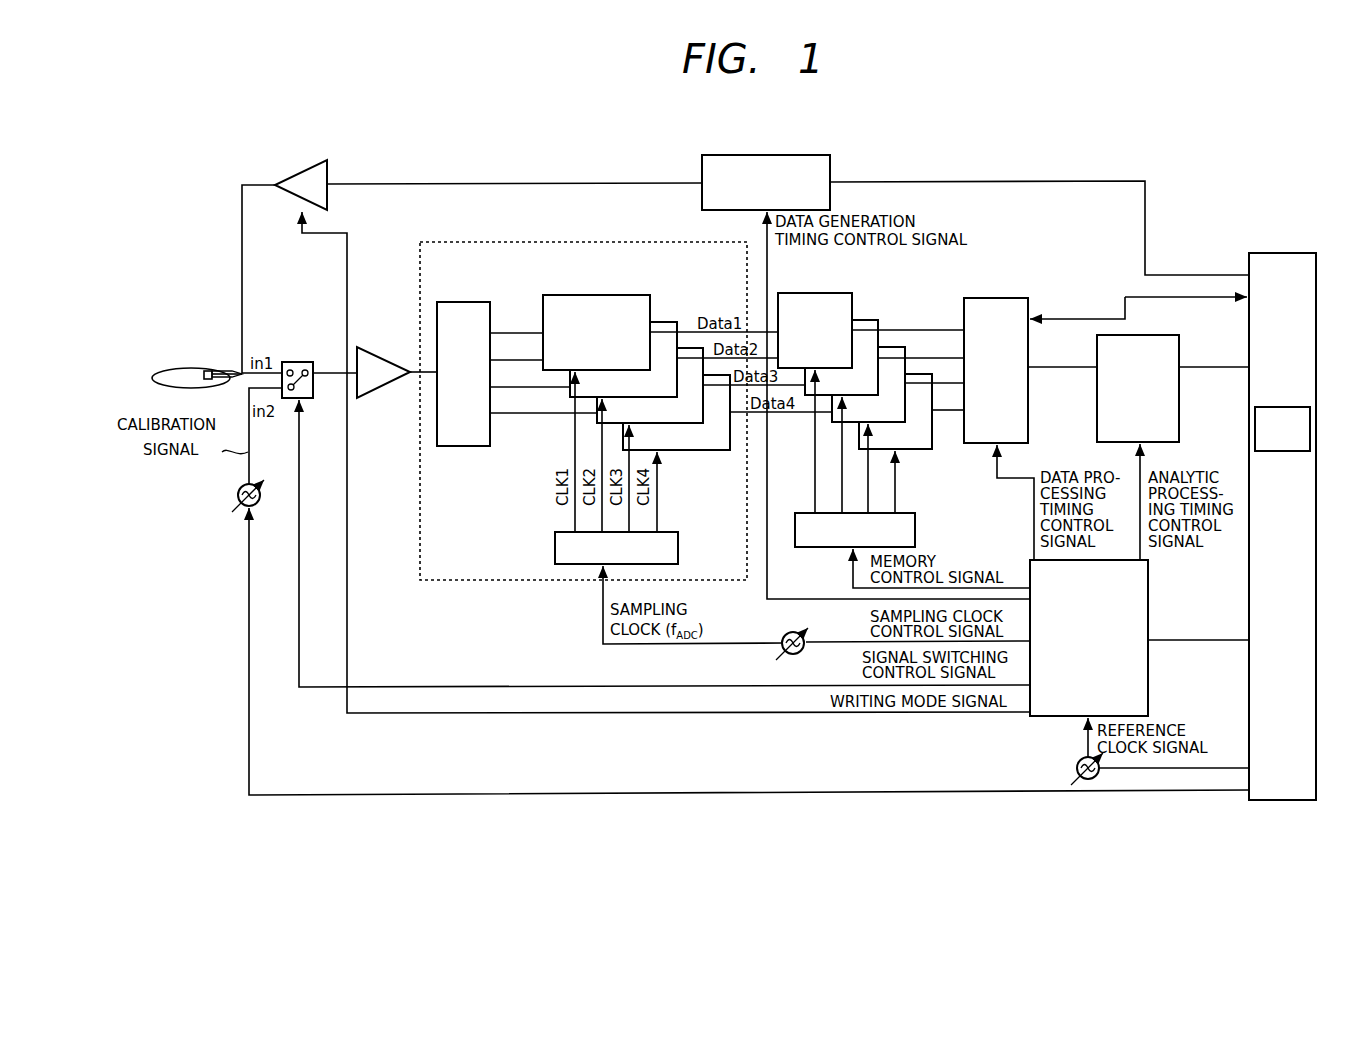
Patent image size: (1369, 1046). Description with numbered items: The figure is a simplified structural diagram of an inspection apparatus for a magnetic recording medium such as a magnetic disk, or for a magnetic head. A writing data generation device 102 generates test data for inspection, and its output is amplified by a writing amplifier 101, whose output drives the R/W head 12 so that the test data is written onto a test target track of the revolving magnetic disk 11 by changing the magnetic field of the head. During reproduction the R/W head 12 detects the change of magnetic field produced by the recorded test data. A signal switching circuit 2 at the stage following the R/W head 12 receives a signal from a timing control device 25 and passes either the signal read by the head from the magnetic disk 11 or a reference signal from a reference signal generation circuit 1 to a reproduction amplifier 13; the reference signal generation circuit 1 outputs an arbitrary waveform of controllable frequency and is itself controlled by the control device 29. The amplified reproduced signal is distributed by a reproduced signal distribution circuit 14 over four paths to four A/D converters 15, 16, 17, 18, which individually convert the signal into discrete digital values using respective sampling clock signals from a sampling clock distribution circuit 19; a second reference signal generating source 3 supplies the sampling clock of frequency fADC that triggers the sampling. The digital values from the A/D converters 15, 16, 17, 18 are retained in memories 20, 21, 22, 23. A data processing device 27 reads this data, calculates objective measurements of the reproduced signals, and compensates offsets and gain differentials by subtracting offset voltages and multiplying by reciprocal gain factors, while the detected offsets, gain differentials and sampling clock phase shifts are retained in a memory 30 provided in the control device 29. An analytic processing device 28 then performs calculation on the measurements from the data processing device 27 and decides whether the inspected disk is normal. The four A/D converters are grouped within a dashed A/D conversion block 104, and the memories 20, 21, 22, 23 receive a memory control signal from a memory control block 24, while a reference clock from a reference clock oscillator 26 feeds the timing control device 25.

The reference signal generation circuit 1 is at (258, 504).
The signal switching circuit 2 is at (296, 362).
The second reference signal generating source 3 is at (800, 653).
The magnetic disk 11 is at (170, 368).
The R/W head 12 is at (208, 370).
The reproduction amplifier 13 is at (374, 357).
The reproduced signal distribution circuit 14 is at (466, 446).
The A/D converter #A 15 is at (635, 295).
The A/D converter #B 16 is at (660, 322).
The A/D converter #C 17 is at (690, 348).
The A/D converter #D 18 is at (697, 452).
The sampling clock distribution circuit 19 is at (680, 548).
The memory 20 is at (828, 295).
The memory 21 is at (867, 320).
The memory 22 is at (895, 347).
The memory 23 is at (918, 452).
The memory controller 24 is at (917, 529).
The timing control device 25 is at (1150, 588).
The reference clock oscillator 26 is at (1077, 772).
The data processing device 27 is at (1010, 298).
The analytic processing device 28 is at (1143, 335).
The control device 29 is at (1277, 253).
The memory 30 is at (1280, 451).
The writing amplifier 101 is at (327, 163).
The writing data generation device 102 is at (790, 156).
The A/D conversion unit 104 is at (520, 242).